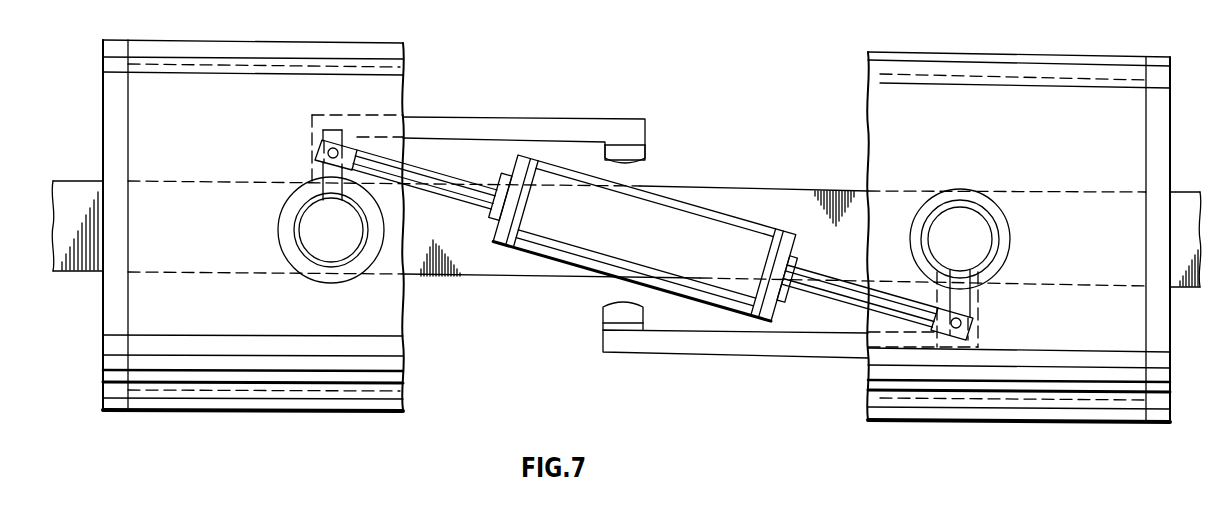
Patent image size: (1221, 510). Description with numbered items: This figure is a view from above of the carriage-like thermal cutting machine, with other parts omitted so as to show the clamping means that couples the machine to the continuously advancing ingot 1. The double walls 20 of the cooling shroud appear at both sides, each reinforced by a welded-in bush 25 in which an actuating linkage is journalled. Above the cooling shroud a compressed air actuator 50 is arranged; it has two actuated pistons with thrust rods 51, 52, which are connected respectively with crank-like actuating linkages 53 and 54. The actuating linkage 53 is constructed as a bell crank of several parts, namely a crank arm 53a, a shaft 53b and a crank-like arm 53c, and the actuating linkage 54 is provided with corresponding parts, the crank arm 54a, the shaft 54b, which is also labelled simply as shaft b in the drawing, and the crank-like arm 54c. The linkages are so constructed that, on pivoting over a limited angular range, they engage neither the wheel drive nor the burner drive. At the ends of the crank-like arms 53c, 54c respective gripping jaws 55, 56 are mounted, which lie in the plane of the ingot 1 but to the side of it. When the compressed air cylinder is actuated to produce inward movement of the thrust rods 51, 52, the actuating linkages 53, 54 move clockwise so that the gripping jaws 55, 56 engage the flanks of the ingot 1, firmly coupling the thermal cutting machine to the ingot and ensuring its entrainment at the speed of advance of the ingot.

The ingot 1 is at (75, 188).
The double walls 20 is at (334, 57).
The shaft b is at (1026, 48).
The bush 25 is at (366, 260).
The compressed air actuator 50 is at (571, 250).
The thrust rod 51 is at (465, 205).
The thrust rod 52 is at (850, 292).
The actuating linkage 53 is at (268, 218).
The crank arm 53a is at (316, 180).
The shaft 53b is at (314, 248).
The crank-like arm 53c is at (452, 128).
The actuating linkage 54 is at (1024, 233).
The crank arm 54a is at (957, 342).
The shaft 54b is at (947, 232).
The crank-like arm 54c is at (748, 347).
The gripping jaw 55 is at (620, 154).
The gripping jaw 56 is at (623, 312).